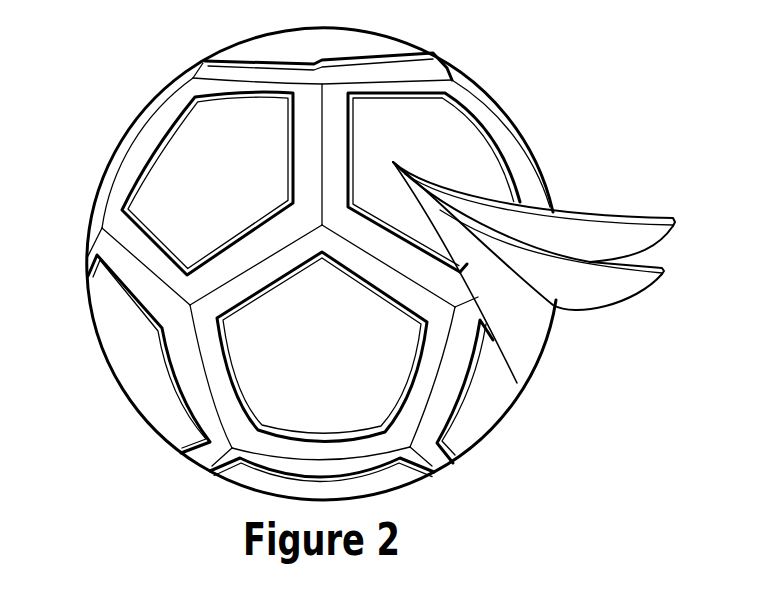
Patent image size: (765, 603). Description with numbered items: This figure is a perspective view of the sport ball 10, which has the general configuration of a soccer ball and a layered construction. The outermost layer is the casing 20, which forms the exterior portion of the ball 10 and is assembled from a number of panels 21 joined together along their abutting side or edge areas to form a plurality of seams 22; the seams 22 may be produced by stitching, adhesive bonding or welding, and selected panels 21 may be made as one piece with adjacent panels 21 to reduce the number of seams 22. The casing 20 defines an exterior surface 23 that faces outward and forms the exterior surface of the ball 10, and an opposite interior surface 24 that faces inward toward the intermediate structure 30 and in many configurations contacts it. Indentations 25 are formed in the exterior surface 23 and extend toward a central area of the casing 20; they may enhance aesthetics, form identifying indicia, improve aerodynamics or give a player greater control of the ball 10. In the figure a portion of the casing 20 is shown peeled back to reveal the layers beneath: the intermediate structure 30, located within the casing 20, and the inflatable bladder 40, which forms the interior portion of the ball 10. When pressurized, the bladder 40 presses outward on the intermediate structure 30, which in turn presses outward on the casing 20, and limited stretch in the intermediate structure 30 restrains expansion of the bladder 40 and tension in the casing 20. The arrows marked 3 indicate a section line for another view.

The sport ball 10 is at (540, 97).
The casing 20 is at (133, 140).
The panels 21 is at (378, 44).
The seams 22 is at (320, 128).
The exterior surface 23 is at (487, 178).
The interior surface 24 is at (622, 240).
The indentations 25 is at (255, 60).
The intermediate structure 30 is at (645, 300).
The inflatable bladder 40 is at (525, 328).
The section line 3 is at (143, 358).